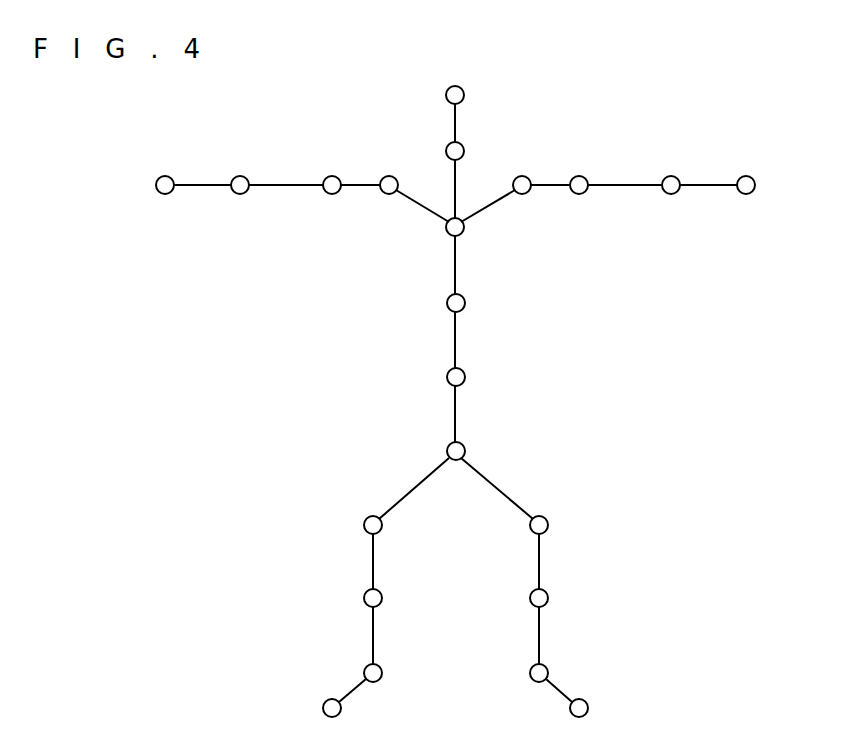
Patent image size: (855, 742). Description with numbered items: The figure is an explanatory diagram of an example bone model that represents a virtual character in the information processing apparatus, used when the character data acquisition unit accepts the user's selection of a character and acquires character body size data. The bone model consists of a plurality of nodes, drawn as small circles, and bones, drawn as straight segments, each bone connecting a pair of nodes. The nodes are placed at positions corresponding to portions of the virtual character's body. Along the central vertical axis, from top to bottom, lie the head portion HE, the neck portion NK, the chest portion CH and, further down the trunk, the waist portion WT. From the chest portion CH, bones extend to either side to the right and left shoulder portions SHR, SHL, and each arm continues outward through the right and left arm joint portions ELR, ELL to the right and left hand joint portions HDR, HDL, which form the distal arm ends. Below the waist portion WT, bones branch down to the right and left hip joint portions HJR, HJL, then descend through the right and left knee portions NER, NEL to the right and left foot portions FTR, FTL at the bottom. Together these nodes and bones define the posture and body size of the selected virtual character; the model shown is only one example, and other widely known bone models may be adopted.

The head portion HE is at (466, 89).
The neck portion NK is at (466, 150).
The chest portion CH is at (465, 237).
The right shoulder portion SHR is at (381, 197).
The left shoulder portion SHL is at (530, 197).
The right arm joint portion ELR is at (240, 197).
The left arm joint portion ELL is at (675, 197).
The right hand joint portion HDR is at (165, 197).
The left hand joint portion HDL is at (750, 197).
The waist portion WT is at (468, 445).
The right hip joint portion HJR is at (358, 526).
The left hip joint portion HJL is at (554, 521).
The right knee portion NER is at (358, 599).
The left knee portion NEL is at (554, 596).
The right foot portion FTR is at (320, 696).
The left foot portion FTL is at (595, 704).